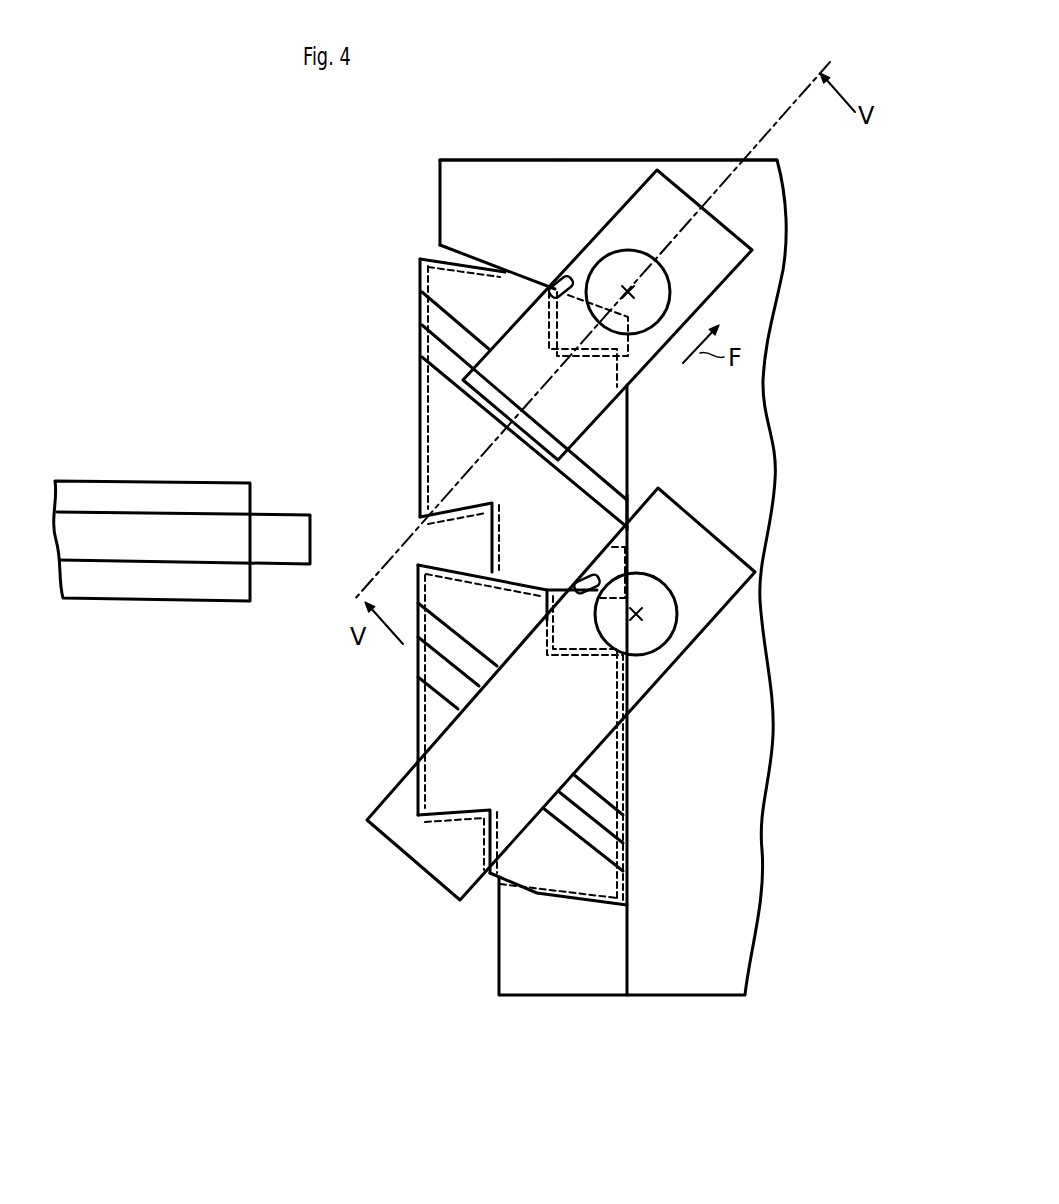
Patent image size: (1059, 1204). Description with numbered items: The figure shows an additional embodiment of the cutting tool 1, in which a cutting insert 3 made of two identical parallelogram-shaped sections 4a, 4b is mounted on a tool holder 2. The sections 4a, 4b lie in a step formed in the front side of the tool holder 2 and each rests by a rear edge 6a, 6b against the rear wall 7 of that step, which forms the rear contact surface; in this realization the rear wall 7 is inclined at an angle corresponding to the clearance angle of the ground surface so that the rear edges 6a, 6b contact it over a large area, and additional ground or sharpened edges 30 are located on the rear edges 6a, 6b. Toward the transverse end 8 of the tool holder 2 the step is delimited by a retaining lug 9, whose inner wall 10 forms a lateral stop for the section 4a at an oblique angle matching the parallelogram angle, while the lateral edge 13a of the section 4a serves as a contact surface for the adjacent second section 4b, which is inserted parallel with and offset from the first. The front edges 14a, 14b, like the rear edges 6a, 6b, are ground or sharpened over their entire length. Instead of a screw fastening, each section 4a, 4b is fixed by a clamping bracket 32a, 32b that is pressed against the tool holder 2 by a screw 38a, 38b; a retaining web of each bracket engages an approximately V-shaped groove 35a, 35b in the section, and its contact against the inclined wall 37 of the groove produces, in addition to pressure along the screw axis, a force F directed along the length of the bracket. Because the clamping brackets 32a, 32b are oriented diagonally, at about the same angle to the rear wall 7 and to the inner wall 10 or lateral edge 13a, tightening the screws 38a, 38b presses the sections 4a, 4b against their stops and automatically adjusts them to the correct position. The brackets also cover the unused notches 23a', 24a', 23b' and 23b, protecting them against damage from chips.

The cutting tool 1 is at (545, 120).
The tool holder 2 is at (718, 788).
The cutting insert 3 is at (521, 492).
The section 4a is at (495, 309).
The section 4b is at (575, 864).
The rear edge 6a is at (630, 485).
The rear edge 6b is at (633, 834).
The rear wall 7 is at (618, 966).
The transverse end 8 is at (606, 158).
The retaining lug 9 is at (488, 158).
The inner wall 10 is at (463, 243).
The lateral edge 13a is at (525, 565).
The front edge 14a is at (420, 397).
The front edge 14b is at (417, 728).
The notch 23a' is at (543, 262).
The notch 23b is at (438, 863).
The notch 23b' is at (573, 648).
The notch 24a' is at (632, 555).
The ground or sharpened edge 30 is at (634, 372).
The clamping bracket 32a is at (720, 287).
The clamping bracket 32b is at (727, 560).
The V-shaped groove 35a is at (430, 347).
The V-shaped groove 35b is at (455, 640).
The inclined wall 37 is at (430, 313).
The screw 38a is at (632, 283).
The screw 38b is at (645, 610).